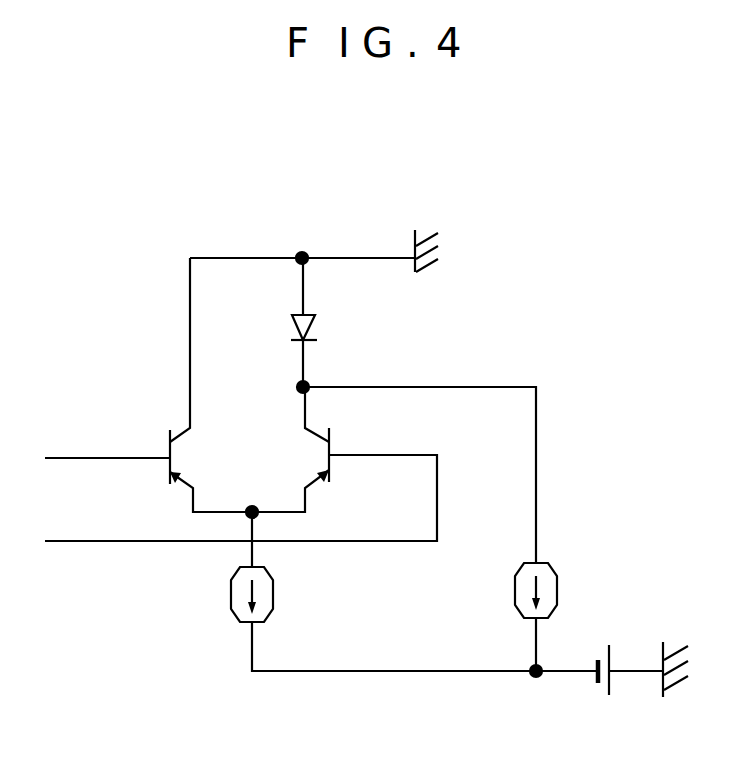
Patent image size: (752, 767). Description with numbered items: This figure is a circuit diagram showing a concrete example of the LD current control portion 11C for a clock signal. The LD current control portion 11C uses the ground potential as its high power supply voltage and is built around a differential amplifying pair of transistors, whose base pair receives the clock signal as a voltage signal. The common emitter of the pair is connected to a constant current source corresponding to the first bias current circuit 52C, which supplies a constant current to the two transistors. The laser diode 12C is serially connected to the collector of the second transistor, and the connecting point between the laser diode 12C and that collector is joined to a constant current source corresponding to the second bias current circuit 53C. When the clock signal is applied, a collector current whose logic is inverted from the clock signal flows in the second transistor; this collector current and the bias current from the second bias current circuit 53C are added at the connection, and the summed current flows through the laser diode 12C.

The LD current control portion for a clock signal 11C is at (562, 280).
The laser diode 12C is at (317, 326).
The first bias current circuit 52C is at (273, 582).
The second bias current circuit 53C is at (557, 568).